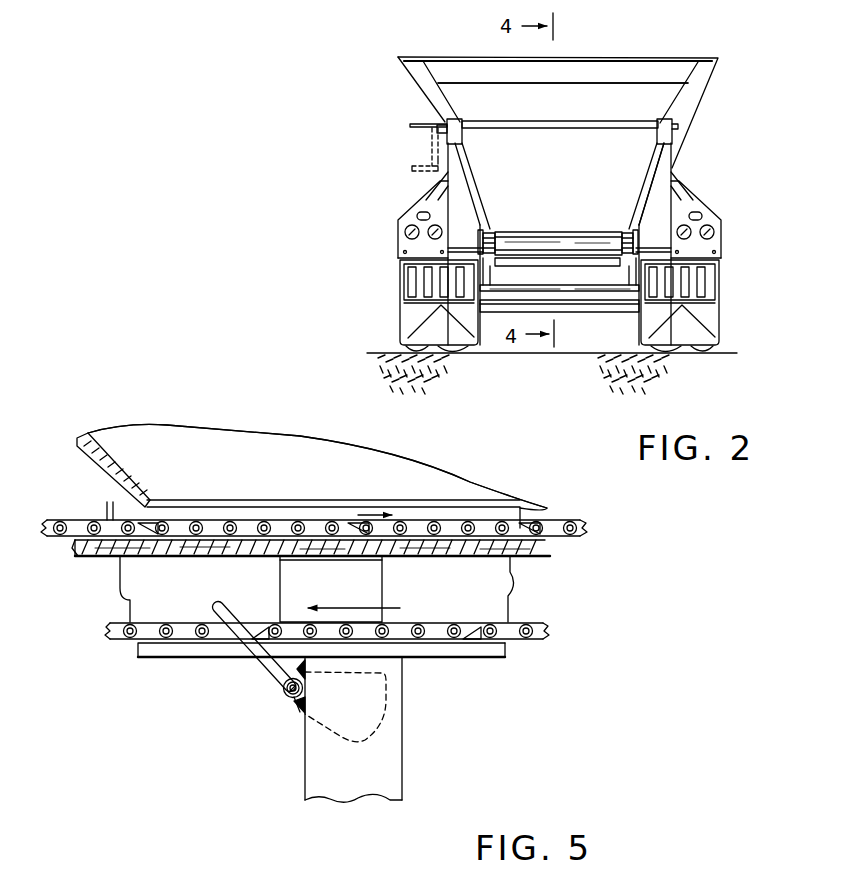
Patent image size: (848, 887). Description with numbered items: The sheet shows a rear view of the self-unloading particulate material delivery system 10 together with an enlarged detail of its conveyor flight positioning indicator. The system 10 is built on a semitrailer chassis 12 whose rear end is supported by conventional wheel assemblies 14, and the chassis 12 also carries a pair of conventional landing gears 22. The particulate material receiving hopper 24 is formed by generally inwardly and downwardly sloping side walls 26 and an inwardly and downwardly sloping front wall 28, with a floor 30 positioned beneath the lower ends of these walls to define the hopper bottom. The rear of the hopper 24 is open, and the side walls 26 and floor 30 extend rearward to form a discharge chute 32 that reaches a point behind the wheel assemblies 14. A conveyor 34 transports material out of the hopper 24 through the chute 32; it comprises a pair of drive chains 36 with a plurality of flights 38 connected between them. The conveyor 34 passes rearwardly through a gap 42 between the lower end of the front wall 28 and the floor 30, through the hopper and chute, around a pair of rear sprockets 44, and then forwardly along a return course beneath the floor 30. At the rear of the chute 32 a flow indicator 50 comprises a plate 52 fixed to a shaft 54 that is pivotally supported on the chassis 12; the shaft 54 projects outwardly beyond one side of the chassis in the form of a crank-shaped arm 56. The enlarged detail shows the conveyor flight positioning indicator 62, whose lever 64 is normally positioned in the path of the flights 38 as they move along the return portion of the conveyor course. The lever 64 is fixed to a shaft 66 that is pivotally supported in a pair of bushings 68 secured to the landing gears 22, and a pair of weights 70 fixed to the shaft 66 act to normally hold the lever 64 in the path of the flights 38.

In FIG. 2, the self-unloading particulate material delivery system 10 is at (431, 44).
In FIG. 5, the self-unloading particulate material delivery system 10 is at (293, 430).
In FIG. 2, the semitrailer chassis 12 is at (693, 144).
In FIG. 2, the wheel assemblies 14 is at (436, 352).
In FIG. 5, the landing gears 22 is at (388, 763).
In FIG. 5, the particulate material receiving hopper 24 is at (333, 455).
In FIG. 5, the side walls 26 is at (206, 475).
In FIG. 5, the front wall 28 is at (110, 518).
In FIG. 5, the floor 30 is at (323, 522).
In FIG. 2, the discharge chute 32 is at (636, 201).
In FIG. 2, the conveyor 34 is at (491, 227).
In FIG. 5, the conveyor 34 is at (73, 518).
In FIG. 2, the drive chains 36 is at (484, 233).
In FIG. 5, the drive chains 36 is at (149, 633).
In FIG. 5, the flights 38 is at (158, 523).
In FIG. 5, the gap 42 is at (136, 511).
In FIG. 2, the rear sprockets 44 is at (624, 243).
In FIG. 2, the flow indicator 50 is at (618, 108).
In FIG. 2, the plate 52 is at (571, 181).
In FIG. 2, the shaft 54 is at (568, 121).
In FIG. 2, the crank-shaped arm 56 is at (423, 128).
In FIG. 5, the conveyor flight positioning indicator 62 is at (272, 706).
In FIG. 5, the lever 64 is at (221, 607).
In FIG. 5, the shaft 66 is at (283, 688).
In FIG. 5, the bushings 68 is at (300, 707).
In FIG. 5, the weights 70 is at (388, 697).